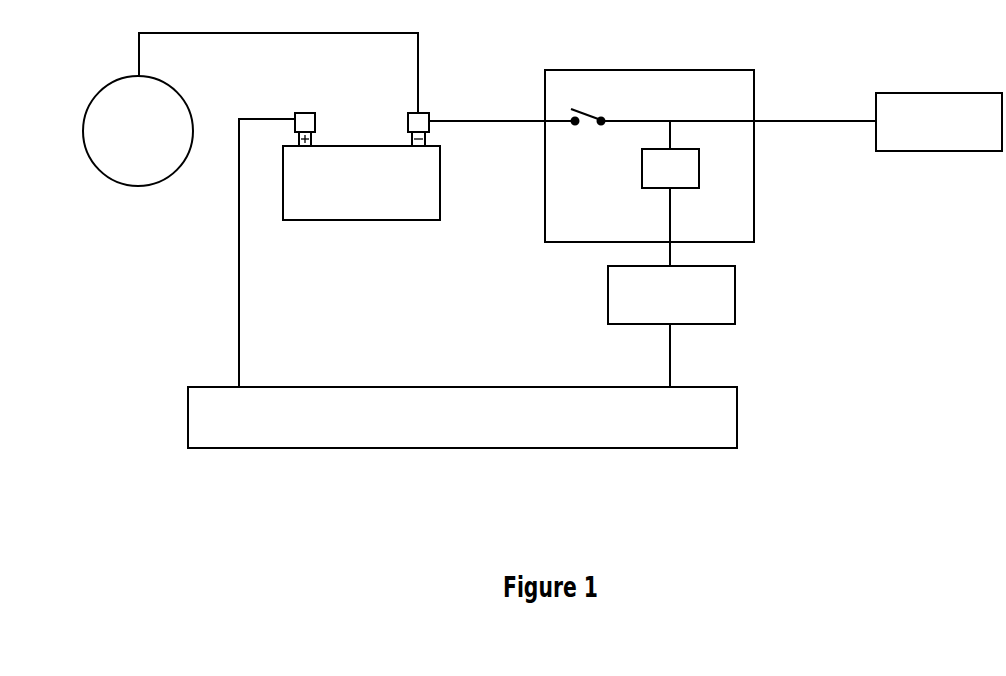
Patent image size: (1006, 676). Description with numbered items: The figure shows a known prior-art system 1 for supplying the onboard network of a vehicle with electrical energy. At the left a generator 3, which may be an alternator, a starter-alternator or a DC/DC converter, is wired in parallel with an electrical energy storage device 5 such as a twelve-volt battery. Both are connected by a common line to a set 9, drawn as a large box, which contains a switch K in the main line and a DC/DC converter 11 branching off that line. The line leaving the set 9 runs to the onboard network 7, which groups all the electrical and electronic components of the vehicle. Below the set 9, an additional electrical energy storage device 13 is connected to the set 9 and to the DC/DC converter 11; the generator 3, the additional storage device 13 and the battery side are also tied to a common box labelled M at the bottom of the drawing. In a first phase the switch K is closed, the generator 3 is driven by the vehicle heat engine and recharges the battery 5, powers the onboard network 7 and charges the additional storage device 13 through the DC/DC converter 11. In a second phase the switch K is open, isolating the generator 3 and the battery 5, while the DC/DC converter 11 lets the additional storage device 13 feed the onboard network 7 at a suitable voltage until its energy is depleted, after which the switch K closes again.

The system 1 is at (542, 235).
The generator 3 is at (138, 131).
The electrical energy storage device 5 is at (361, 166).
The onboard network 7 is at (939, 122).
The set 9 is at (649, 132).
The DC/DC converter 11 is at (670, 168).
The additional electrical energy storage device 13 is at (671, 295).
The switch K is at (588, 107).
The motor M is at (462, 417).